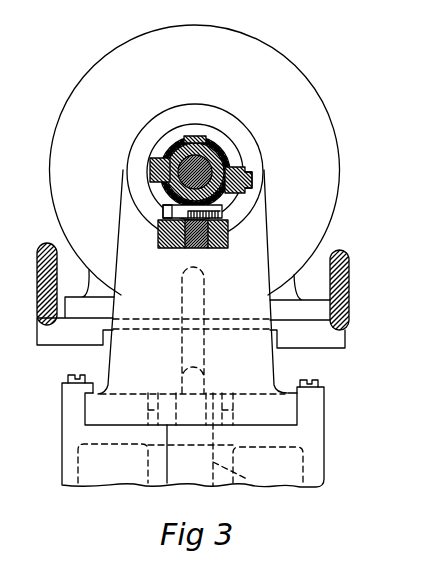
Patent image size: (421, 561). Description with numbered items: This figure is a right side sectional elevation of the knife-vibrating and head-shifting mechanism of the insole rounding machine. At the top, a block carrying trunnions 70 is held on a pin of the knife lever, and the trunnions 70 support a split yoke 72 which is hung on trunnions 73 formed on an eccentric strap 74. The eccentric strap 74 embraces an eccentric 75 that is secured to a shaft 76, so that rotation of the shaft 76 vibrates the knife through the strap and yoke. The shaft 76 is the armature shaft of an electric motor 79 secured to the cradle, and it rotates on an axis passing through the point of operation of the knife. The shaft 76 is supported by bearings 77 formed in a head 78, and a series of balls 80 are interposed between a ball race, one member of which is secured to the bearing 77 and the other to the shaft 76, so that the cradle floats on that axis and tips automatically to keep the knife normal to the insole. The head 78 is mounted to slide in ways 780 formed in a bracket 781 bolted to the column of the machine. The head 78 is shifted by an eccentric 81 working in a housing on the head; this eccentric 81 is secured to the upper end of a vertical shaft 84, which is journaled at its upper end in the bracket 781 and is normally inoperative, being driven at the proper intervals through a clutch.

The trunnions 70 is at (228, 243).
The split yoke 72 is at (205, 205).
The trunnions 73 is at (250, 178).
The eccentric strap 74 is at (240, 165).
The eccentric 75 is at (220, 153).
The shaft 76 is at (200, 147).
The bearings 77 is at (138, 133).
The head 78 is at (275, 365).
The electric motor 79 is at (278, 53).
The balls 80 is at (183, 140).
The eccentric 81 is at (297, 418).
The vertical shaft 84 is at (250, 480).
The ways 780 is at (297, 410).
The bracket 781 is at (324, 468).